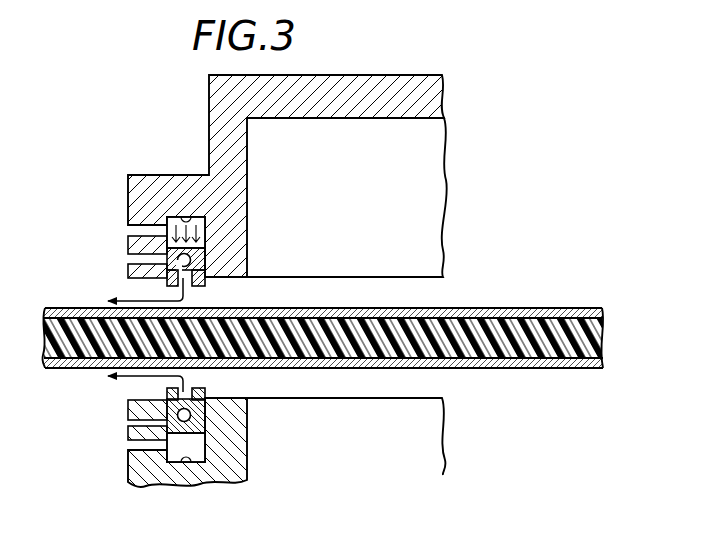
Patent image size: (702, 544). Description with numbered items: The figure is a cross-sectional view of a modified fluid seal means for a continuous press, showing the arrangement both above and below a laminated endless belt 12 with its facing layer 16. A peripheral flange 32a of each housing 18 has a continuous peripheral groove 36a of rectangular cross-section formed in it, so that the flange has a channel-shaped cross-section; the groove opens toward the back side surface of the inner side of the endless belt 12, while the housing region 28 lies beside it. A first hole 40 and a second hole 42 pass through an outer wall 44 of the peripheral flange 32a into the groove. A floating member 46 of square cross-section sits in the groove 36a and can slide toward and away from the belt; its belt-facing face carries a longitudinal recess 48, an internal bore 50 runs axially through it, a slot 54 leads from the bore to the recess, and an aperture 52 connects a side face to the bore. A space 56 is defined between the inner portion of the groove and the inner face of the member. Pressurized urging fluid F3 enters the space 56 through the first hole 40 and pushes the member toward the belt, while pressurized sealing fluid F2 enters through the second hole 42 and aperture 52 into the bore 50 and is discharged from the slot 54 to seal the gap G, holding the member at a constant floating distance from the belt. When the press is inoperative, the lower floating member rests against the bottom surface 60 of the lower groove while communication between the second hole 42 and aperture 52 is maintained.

The endless belt 12 is at (353, 308).
The facing layer of plate 16 is at (447, 316).
The housing 18 is at (325, 85).
The recess in support block 28 is at (354, 157).
The peripheral flange 32a is at (150, 177).
The continuous peripheral groove 36a is at (184, 215).
The first hole 40 is at (135, 222).
The second hole 42 is at (140, 258).
The outer wall 44 is at (136, 276).
The floating member 46 is at (206, 262).
The longitudinal recess 48 is at (206, 288).
The internal bore 50 is at (206, 248).
The aperture 52 is at (166, 283).
The slot 54 is at (192, 261).
The space 56 is at (206, 218).
The bottom surface 60 is at (203, 474).
The gap G is at (193, 297).
The pressurized sealing fluid F2 is at (127, 260).
The pressurized urging fluid F3 is at (127, 231).